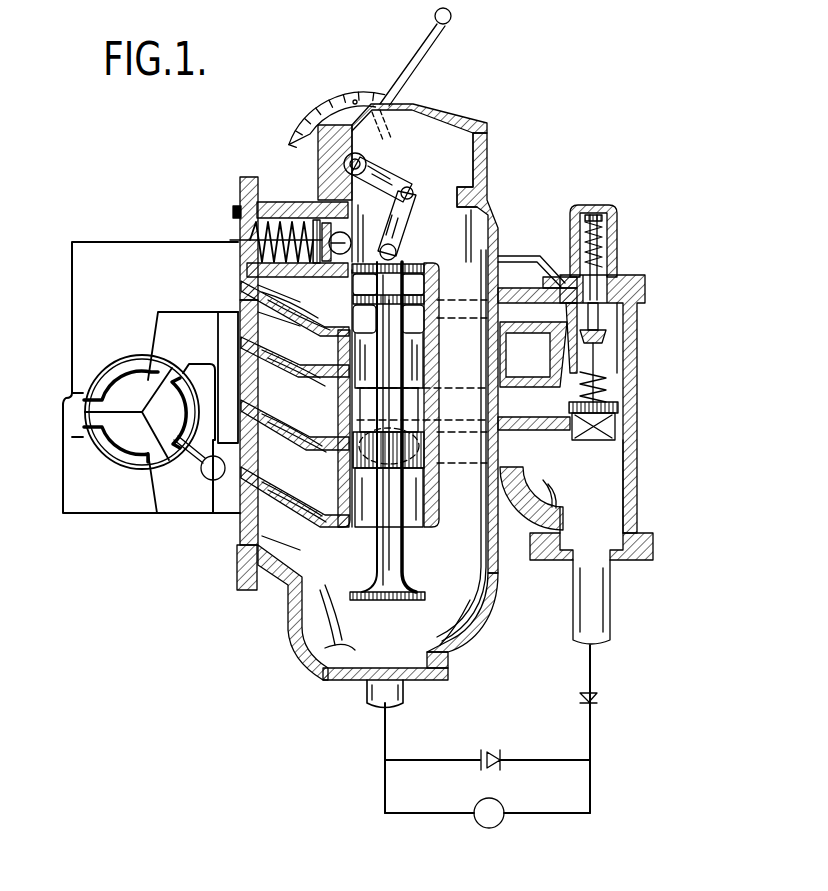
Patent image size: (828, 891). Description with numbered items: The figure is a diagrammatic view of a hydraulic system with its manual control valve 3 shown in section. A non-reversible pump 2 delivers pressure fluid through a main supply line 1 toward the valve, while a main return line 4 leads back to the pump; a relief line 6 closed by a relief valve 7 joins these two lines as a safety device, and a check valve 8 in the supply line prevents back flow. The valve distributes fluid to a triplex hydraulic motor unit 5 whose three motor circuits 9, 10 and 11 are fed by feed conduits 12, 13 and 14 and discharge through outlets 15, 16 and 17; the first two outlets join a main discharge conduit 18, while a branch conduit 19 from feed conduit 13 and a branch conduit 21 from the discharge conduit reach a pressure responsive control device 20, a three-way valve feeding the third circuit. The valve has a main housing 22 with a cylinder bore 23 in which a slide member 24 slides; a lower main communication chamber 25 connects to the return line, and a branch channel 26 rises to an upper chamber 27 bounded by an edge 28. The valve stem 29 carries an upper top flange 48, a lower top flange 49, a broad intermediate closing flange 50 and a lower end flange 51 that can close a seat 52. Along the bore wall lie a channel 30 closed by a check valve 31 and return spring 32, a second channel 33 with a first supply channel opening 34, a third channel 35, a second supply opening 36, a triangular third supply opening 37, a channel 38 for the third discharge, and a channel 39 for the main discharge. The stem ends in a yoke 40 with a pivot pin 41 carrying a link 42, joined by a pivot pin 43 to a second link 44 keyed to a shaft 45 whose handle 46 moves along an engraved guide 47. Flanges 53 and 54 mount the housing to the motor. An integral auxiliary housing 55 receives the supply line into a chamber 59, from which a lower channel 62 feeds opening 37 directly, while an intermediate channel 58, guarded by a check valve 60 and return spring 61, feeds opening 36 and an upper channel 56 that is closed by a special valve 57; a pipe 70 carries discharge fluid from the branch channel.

The main supply line 1 is at (590, 730).
The non-reversible pump 2 is at (482, 826).
The manual control valve 3 is at (312, 657).
The main return line 4 is at (385, 728).
The hydraulic motor unit 5 is at (114, 370).
The relief line 6 is at (439, 760).
The relief valve 7 is at (491, 750).
The check valve 8 is at (596, 697).
The first motor circuit 9 is at (116, 443).
The second motor circuit 10 is at (128, 414).
The third motor circuit 11 is at (170, 413).
The feed conduit 12 is at (160, 242).
The feed conduit 13 is at (176, 312).
The feed conduit 14 is at (207, 461).
The outlet 15 is at (147, 490).
The outlet 16 is at (93, 513).
The outlet 17 is at (190, 369).
The main discharge conduit 18 is at (187, 513).
The branch conduit 19 is at (218, 336).
The pressure responsive control device 20 is at (207, 462).
The branch conduit 21 is at (213, 498).
The main housing 22 is at (305, 615).
The cylinder bore 23 is at (427, 352).
The slide member 24 is at (405, 552).
The main communication chamber 25 is at (322, 645).
The branch channel 26 is at (480, 574).
The upper chamber 27 is at (450, 173).
The edge 28 is at (440, 275).
The valve stem 29 is at (378, 569).
The channel 30 is at (350, 246).
The check valve 31 is at (320, 205).
The return spring 32 is at (242, 223).
The second channel 33 is at (243, 290).
The first supply channel opening 34 is at (414, 314).
The third channel 35 is at (247, 306).
The second supply opening 36 is at (413, 393).
The third supply opening 37 is at (404, 468).
The channel 38 is at (333, 507).
The channel 39 is at (313, 563).
The yoke 40 is at (383, 258).
The pivot pin 41 is at (400, 250).
The link 42 is at (430, 220).
The pivot pin 43 is at (462, 190).
The second link 44 is at (384, 174).
The shaft 45 is at (362, 160).
The handle 46 is at (441, 28).
The guide 47 is at (333, 95).
The upper top flange 48 is at (427, 268).
The lower top flange 49 is at (438, 297).
The intermediate closing flange 50 is at (430, 453).
The lower end flange 51 is at (425, 596).
The seat 52 is at (413, 530).
The flange 53 is at (237, 565).
The flange 54 is at (240, 189).
The auxiliary housing 55 is at (630, 373).
The upper channel 56 is at (503, 310).
The special valve 57 is at (613, 283).
The intermediate channel 58 is at (537, 398).
The chamber 59 is at (613, 475).
The check valve 60 is at (615, 428).
The return spring 61 is at (610, 392).
The lower channel 62 is at (524, 473).
The pipe 70 is at (517, 259).